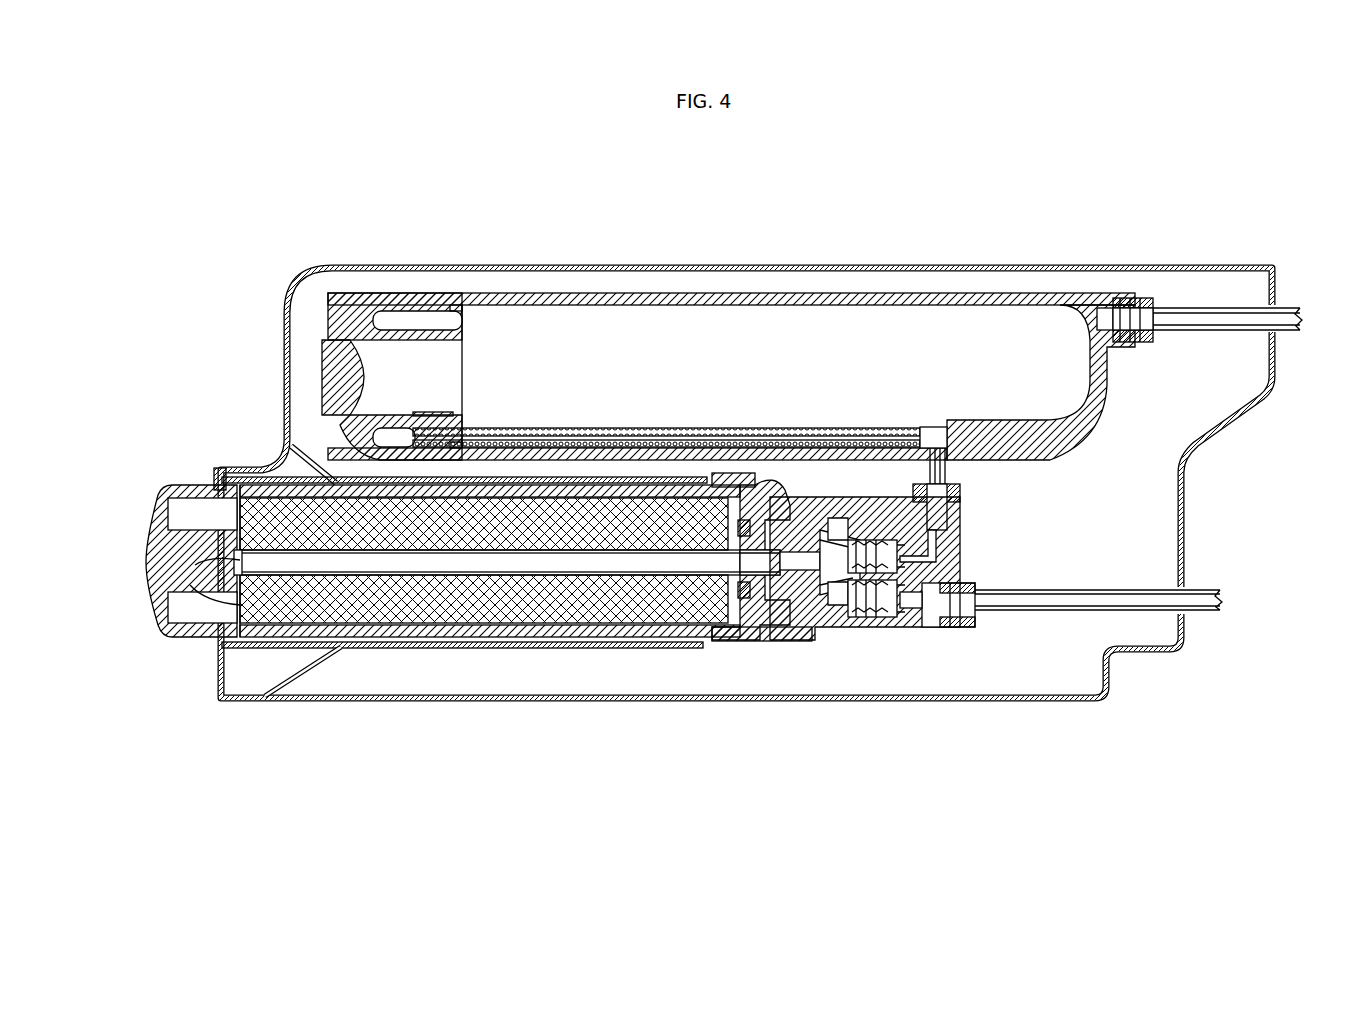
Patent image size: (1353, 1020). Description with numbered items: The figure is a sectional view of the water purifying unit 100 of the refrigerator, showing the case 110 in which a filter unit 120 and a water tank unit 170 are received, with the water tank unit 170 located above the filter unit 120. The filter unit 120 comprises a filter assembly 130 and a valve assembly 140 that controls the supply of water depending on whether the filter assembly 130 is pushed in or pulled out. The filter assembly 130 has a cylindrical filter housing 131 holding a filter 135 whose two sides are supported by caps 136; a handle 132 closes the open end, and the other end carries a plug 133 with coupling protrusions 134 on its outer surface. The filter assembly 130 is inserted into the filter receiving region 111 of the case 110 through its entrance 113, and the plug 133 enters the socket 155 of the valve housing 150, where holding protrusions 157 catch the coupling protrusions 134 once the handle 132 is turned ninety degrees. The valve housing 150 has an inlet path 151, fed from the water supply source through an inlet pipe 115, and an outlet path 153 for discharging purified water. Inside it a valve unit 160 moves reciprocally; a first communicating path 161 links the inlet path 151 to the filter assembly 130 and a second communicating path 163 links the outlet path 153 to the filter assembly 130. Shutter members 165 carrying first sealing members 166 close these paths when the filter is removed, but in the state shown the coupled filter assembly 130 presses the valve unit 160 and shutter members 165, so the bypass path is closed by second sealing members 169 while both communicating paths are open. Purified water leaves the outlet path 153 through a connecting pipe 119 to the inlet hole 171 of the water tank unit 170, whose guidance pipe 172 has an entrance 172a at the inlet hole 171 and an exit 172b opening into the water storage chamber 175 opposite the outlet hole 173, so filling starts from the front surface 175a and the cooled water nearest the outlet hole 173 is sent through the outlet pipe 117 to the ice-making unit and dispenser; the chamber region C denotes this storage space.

The water purifying unit 100 is at (709, 167).
The case 110 is at (310, 283).
The filter receiving region 111 is at (307, 463).
The entrance 113 is at (213, 483).
The inlet pipe 115 is at (1087, 590).
The outlet pipe 117 is at (1200, 308).
The connecting pipe 119 is at (975, 465).
The filter unit 120 is at (695, 660).
The filter assembly 130 is at (454, 537).
The filter housing 131 is at (464, 640).
The handle 132 is at (162, 623).
The plug 133 is at (775, 495).
The coupling protrusions 134 is at (783, 718).
The filter 135 is at (383, 614).
The caps 136 is at (190, 586).
The valve assembly 140 is at (880, 648).
The valve housing 150 is at (913, 548).
The inlet path 151 is at (932, 627).
The outlet path 153 is at (940, 545).
The socket 155 is at (742, 520).
The holding protrusions 157 is at (753, 643).
The valve unit 160 is at (823, 640).
The first communicating path 161 is at (808, 625).
The second communicating path 163 is at (830, 540).
The shutter members 165 is at (862, 540).
The first sealing members 166 is at (875, 540).
The second sealing members 169 is at (893, 545).
The water tank unit 170 is at (683, 338).
The inlet hole 171 is at (948, 448).
The guidance pipe 172 is at (560, 428).
The entrance 172a is at (930, 427).
The exit 172b is at (422, 415).
The outlet hole 173 is at (1092, 293).
The water storage chamber 175 is at (630, 340).
The front surface 175a is at (340, 375).
The chamber C is at (993, 522).